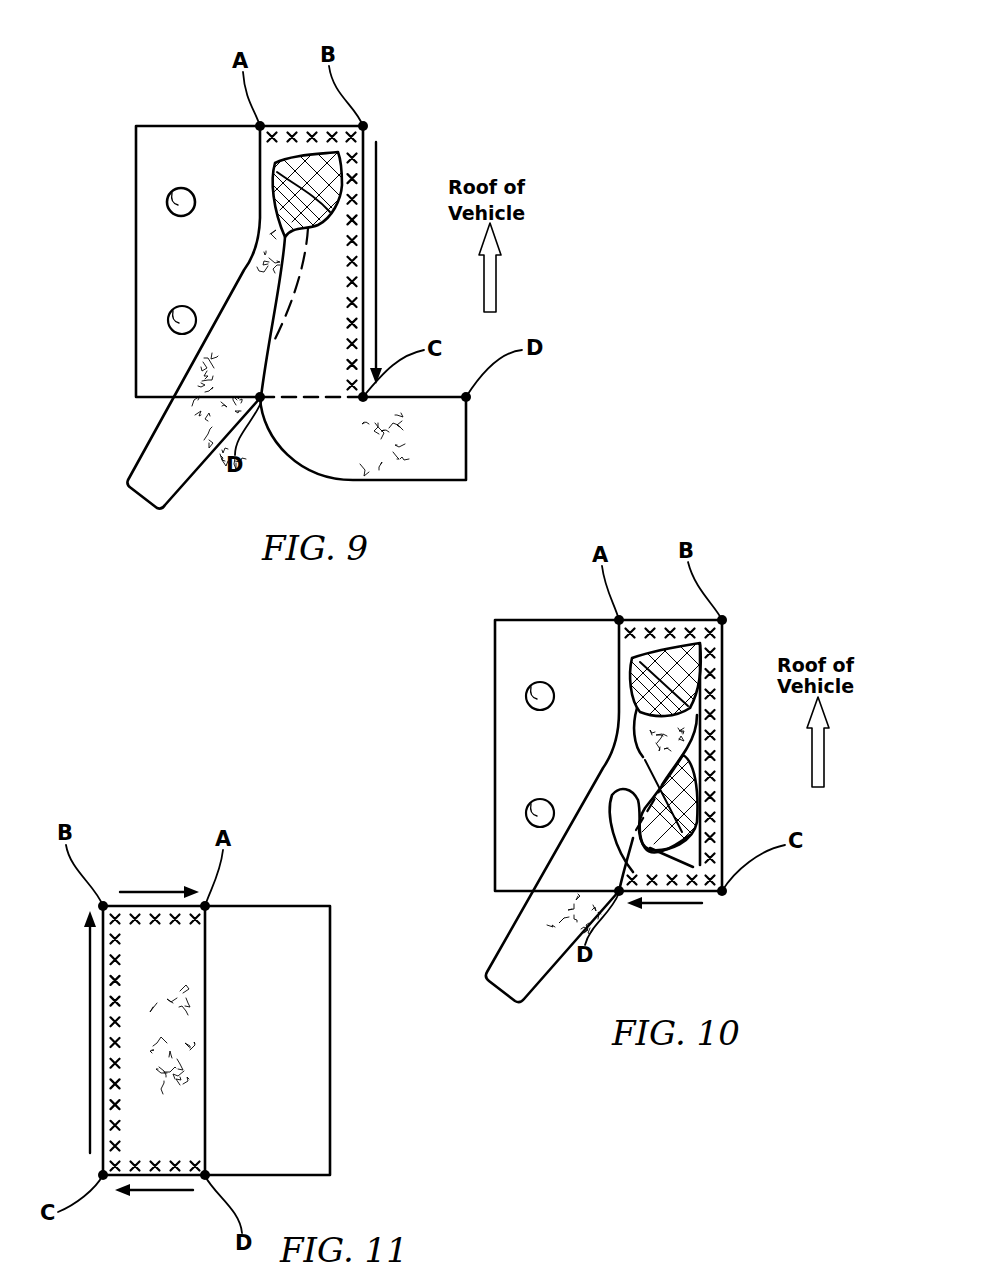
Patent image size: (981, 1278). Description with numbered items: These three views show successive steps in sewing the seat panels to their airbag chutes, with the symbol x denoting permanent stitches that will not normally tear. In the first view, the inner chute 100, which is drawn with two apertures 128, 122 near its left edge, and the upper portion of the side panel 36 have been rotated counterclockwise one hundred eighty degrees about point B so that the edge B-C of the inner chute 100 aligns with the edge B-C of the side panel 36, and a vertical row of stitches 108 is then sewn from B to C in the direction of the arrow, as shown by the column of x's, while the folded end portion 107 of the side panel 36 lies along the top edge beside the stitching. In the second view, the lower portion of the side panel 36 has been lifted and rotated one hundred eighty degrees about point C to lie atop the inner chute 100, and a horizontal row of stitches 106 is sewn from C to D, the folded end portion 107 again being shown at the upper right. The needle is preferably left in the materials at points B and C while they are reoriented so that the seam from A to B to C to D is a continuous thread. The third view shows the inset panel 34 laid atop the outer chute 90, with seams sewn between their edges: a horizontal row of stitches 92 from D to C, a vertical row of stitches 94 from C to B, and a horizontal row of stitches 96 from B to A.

In FIG. 9, the inner chute 100 is at (150, 165).
In FIG. 10, the inner chute 100 is at (512, 652).
In FIG. 9, the upper aperture 128 is at (170, 205).
In FIG. 10, the upper aperture 128 is at (530, 697).
In FIG. 9, the lower aperture 122 is at (172, 318).
In FIG. 10, the lower aperture 122 is at (530, 814).
In FIG. 9, the side panel 36 is at (165, 480).
In FIG. 10, the side panel 36 is at (521, 951).
In FIG. 9, the folded strap end portion 107 is at (312, 133).
In FIG. 10, the folded strap end portion 107 is at (670, 633).
In FIG. 9, the vertical row of stitches 108 is at (352, 222).
In FIG. 10, the vertical row of stitches 108 is at (712, 715).
In FIG. 10, the horizontal row of stitches 106 is at (672, 882).
In FIG. 11, the outer chute 90 is at (312, 977).
In FIG. 11, the inset panel 34 is at (180, 1027).
In FIG. 11, the horizontal row of stitches 96 is at (155, 912).
In FIG. 11, the vertical row of stitches 94 is at (113, 1000).
In FIG. 11, the horizontal row of stitches 92 is at (155, 1168).